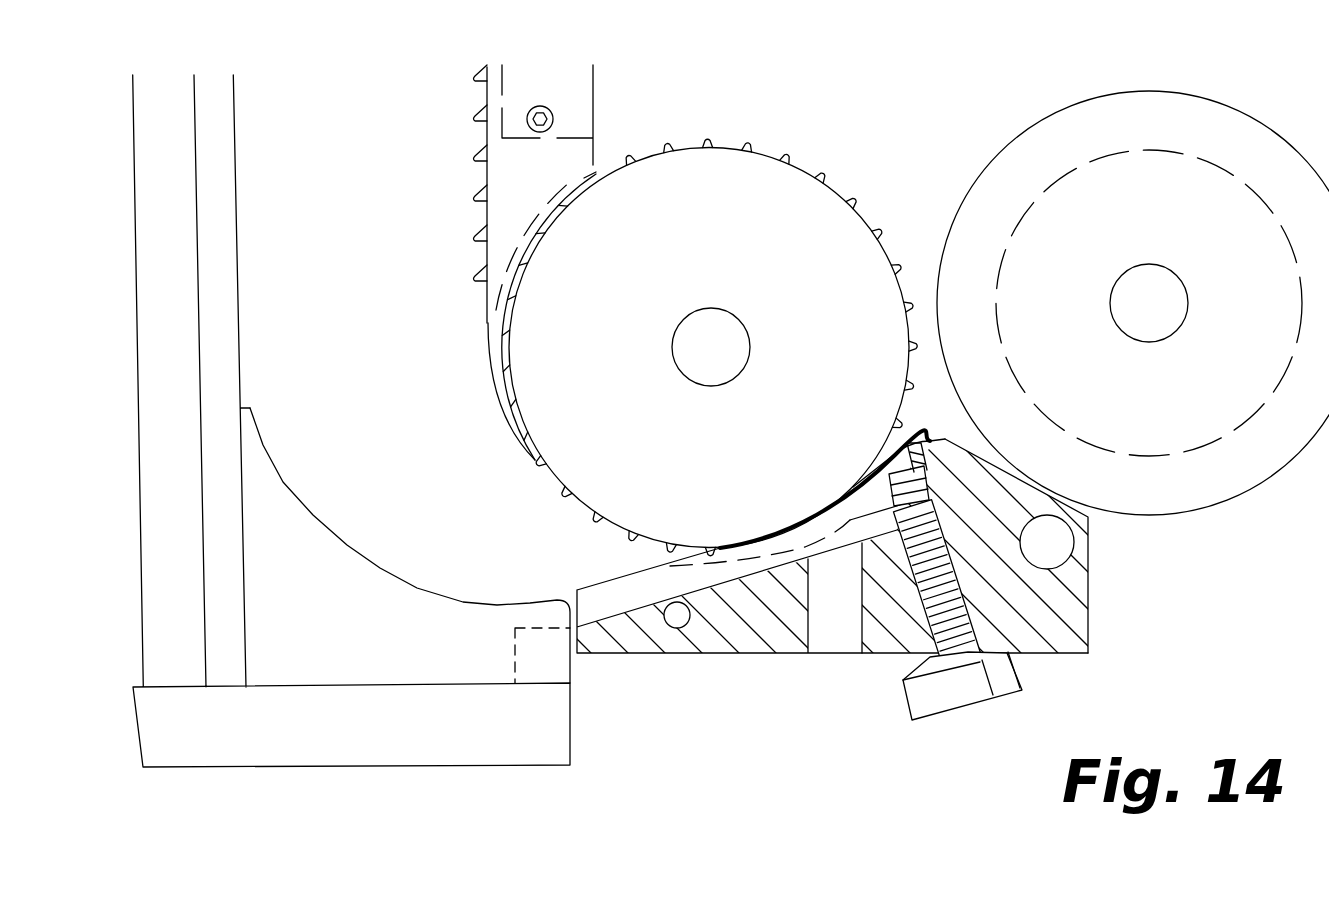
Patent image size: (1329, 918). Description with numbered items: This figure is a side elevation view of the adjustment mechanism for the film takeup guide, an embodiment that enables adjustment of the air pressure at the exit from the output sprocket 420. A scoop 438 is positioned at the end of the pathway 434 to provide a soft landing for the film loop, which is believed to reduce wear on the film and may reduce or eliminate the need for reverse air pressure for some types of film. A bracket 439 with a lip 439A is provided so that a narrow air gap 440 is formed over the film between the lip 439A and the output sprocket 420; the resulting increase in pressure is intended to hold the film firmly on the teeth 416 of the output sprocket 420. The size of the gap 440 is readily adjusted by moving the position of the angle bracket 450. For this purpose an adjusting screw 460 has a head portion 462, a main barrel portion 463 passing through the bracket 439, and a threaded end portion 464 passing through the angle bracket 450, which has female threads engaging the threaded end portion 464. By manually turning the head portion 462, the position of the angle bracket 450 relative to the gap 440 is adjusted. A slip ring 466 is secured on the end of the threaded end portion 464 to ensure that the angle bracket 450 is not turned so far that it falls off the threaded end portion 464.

The teeth 416 is at (885, 233).
The output sprocket 420 is at (760, 177).
The pathway 434 is at (388, 268).
The scoop 438 is at (377, 568).
The bracket 439 is at (1102, 592).
The lip 439A is at (918, 447).
The air gap 440 is at (513, 157).
The angle bracket 450 is at (867, 507).
The adjusting screw 460 is at (995, 712).
The head portion 462 is at (1027, 670).
The main barrel portion 463 is at (893, 575).
The threaded end portion 464 is at (938, 467).
The slip ring 466 is at (892, 477).